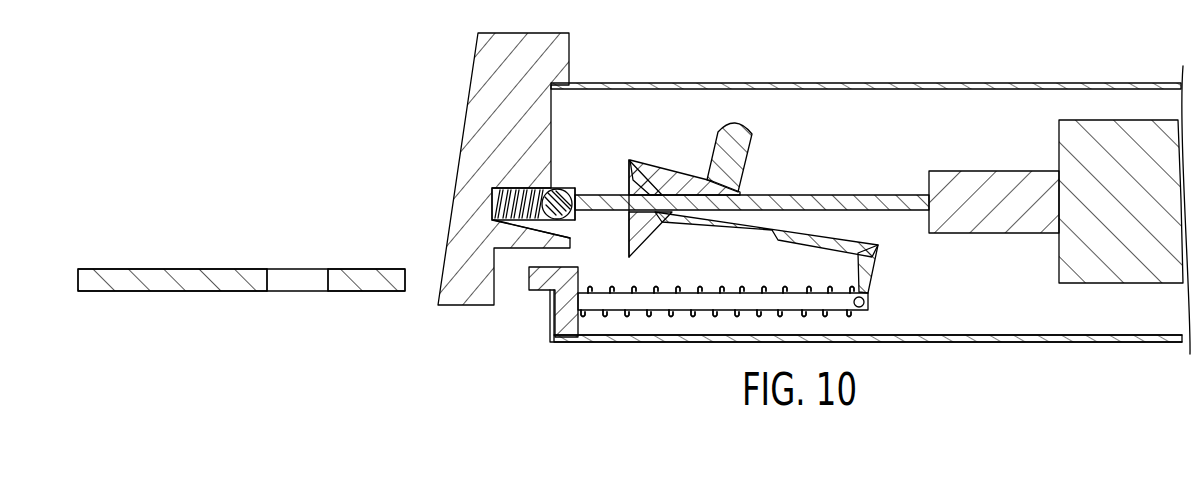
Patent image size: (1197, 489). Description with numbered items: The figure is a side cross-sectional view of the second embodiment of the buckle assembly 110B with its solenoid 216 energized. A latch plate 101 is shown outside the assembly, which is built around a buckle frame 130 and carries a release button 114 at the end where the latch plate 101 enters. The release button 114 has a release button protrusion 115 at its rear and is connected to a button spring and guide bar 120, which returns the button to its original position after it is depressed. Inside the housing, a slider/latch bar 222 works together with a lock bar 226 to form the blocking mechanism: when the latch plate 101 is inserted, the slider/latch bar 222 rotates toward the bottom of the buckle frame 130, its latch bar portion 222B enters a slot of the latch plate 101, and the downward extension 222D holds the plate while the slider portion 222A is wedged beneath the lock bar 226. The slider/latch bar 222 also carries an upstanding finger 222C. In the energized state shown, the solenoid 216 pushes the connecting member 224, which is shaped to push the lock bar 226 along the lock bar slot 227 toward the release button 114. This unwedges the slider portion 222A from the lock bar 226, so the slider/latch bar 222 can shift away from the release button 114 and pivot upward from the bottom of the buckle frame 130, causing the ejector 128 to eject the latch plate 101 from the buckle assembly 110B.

The latch plate 101 is at (218, 277).
The release button 114 is at (513, 46).
The release button protrusion 115 is at (503, 245).
The buckle assembly 110B is at (905, 65).
The buckle frame 130 is at (692, 345).
The ejector 128 is at (580, 328).
The button spring and guide bar 120 is at (521, 187).
The lock bar 226 is at (561, 188).
The lock bar slot 227 is at (594, 189).
The connecting member 224 is at (862, 190).
The solenoid 216 is at (1134, 200).
The slider/latch bar 222 is at (727, 185).
The slider portion 222A is at (752, 152).
The latch bar portion 222B is at (700, 222).
The latch finger 222C is at (735, 117).
The downward extension 222D is at (627, 222).